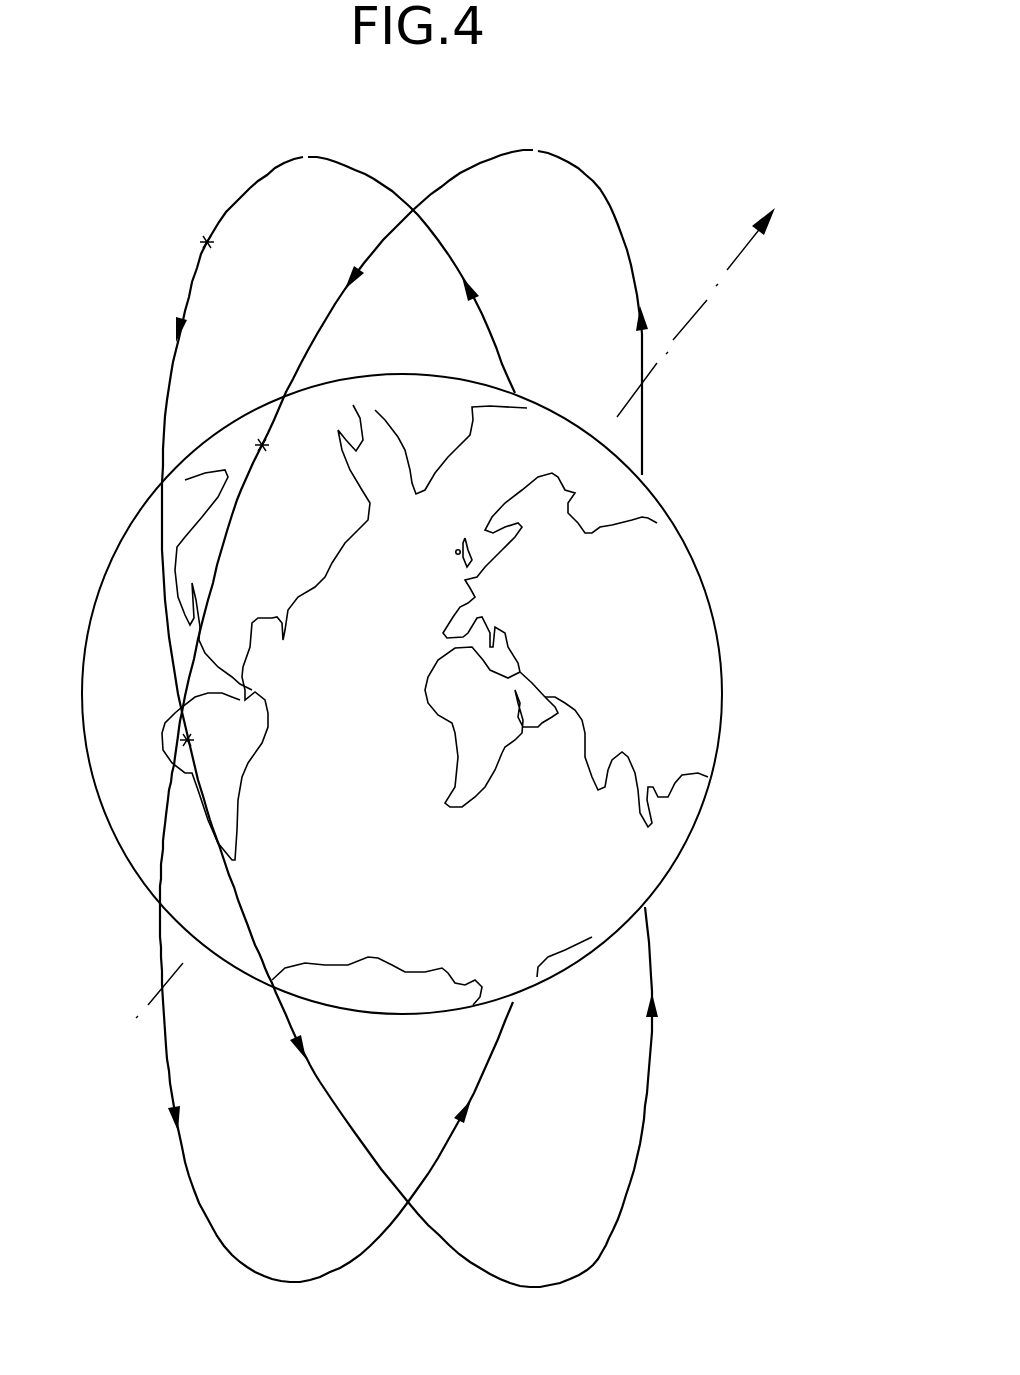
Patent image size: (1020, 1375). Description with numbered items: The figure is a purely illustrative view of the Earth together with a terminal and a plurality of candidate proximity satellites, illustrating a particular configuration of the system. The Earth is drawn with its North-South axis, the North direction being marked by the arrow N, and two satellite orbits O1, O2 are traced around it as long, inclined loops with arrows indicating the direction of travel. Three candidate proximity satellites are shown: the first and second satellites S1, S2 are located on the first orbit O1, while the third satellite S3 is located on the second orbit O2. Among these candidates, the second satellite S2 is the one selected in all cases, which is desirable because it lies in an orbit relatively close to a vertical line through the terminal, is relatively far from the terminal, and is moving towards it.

The first orbit O1 is at (308, 155).
The second orbit O2 is at (578, 165).
The first satellite S1 is at (204, 730).
The second satellite S2 is at (192, 242).
The third satellite S3 is at (277, 458).
The North N is at (455, 610).